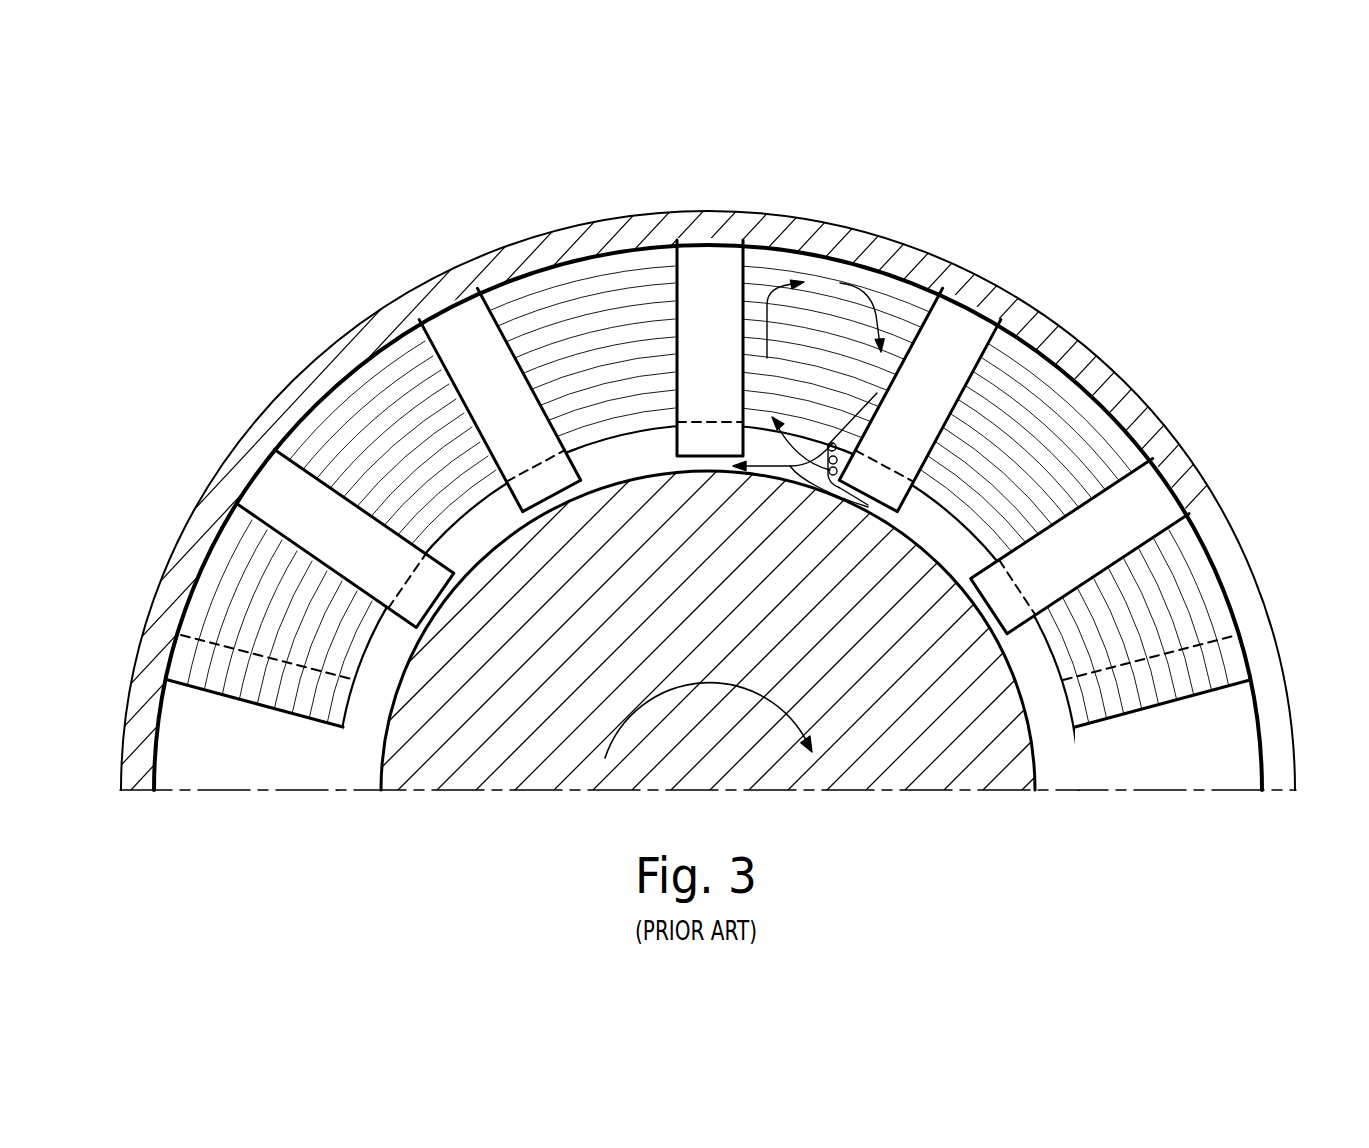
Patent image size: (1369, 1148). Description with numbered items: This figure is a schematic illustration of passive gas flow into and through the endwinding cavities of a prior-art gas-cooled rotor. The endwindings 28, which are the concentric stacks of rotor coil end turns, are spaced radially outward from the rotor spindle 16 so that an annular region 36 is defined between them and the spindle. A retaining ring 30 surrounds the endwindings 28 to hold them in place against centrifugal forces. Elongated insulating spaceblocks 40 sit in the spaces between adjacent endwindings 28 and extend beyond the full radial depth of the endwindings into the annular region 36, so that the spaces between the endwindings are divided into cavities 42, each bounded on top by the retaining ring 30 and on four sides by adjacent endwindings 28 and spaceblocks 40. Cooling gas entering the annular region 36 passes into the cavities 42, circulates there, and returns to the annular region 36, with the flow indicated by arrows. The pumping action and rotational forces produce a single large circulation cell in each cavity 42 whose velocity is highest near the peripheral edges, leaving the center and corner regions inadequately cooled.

The rotor spindle 16 is at (845, 768).
The endwindings 28 is at (1177, 720).
The retaining ring 30 is at (1262, 642).
The annular region 36 is at (620, 457).
The spaceblocks 40 is at (713, 264).
The cavities 42 is at (1035, 435).